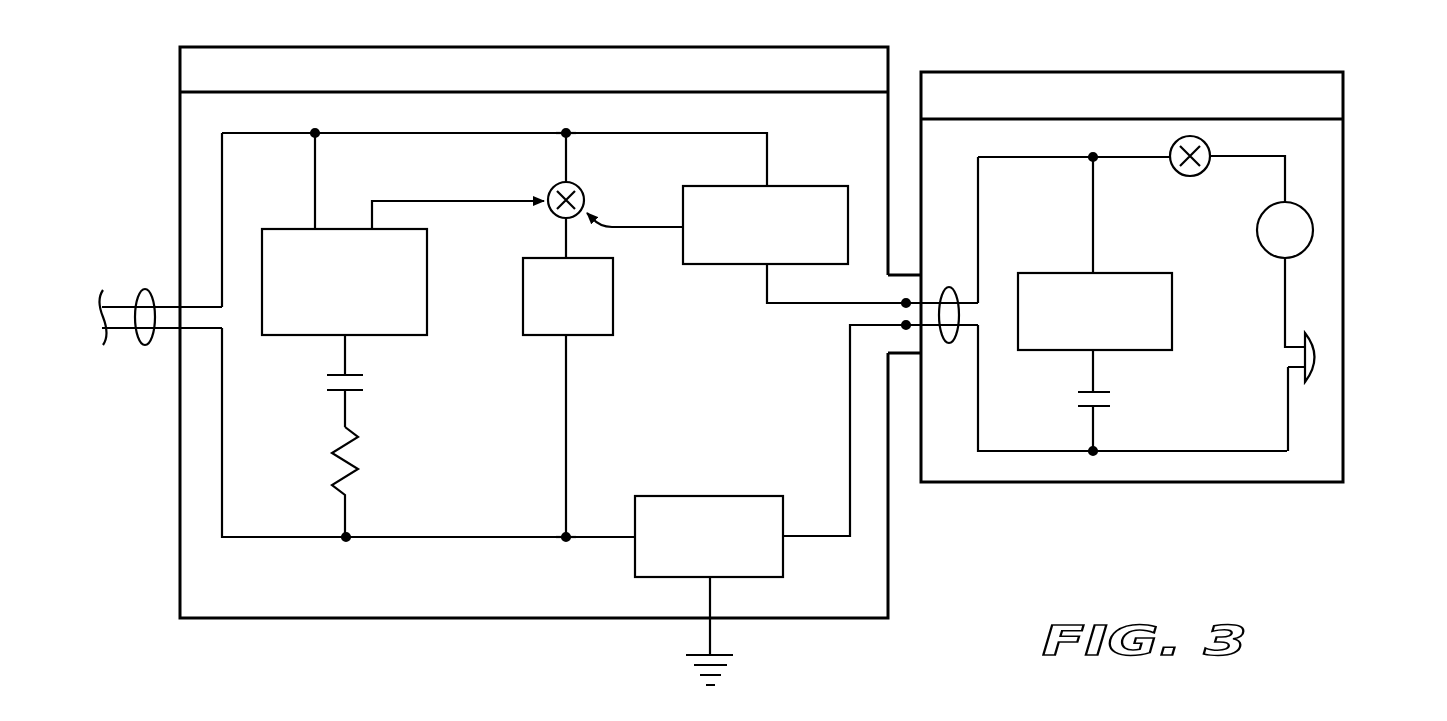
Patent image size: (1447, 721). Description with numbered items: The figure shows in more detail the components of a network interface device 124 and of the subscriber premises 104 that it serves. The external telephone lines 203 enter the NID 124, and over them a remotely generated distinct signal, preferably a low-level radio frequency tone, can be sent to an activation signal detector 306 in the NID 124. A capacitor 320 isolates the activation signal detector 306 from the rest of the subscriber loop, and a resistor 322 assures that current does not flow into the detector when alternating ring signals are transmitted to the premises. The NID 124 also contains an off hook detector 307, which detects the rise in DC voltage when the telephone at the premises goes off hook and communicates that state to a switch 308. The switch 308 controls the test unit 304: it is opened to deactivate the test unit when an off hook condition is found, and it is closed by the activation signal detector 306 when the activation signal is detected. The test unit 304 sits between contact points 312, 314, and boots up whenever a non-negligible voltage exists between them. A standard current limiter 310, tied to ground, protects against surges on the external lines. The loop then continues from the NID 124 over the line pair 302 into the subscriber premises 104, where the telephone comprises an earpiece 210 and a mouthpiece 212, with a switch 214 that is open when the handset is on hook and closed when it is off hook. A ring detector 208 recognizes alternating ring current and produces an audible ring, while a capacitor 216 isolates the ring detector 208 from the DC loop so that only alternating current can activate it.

The network interface device 124 is at (726, 67).
The subscriber premises 104 is at (1212, 91).
The telephone lines 203 is at (143, 295).
The subscriber line to premise 302 is at (946, 288).
The test unit 304 is at (520, 318).
The activation signal detector 306 is at (260, 247).
The off hook detector 307 is at (816, 182).
The switch 308 is at (580, 189).
The current limiter 310 is at (633, 569).
The contact point 312 is at (557, 544).
The contact point 314 is at (553, 127).
The capacitor 320 is at (323, 381).
The resistor 322 is at (331, 466).
The ring detector 208 is at (1180, 332).
The earpiece 210 is at (1314, 222).
The mouthpiece 212 is at (1324, 368).
The switch 214 is at (1214, 150).
The capacitor 216 is at (1076, 410).